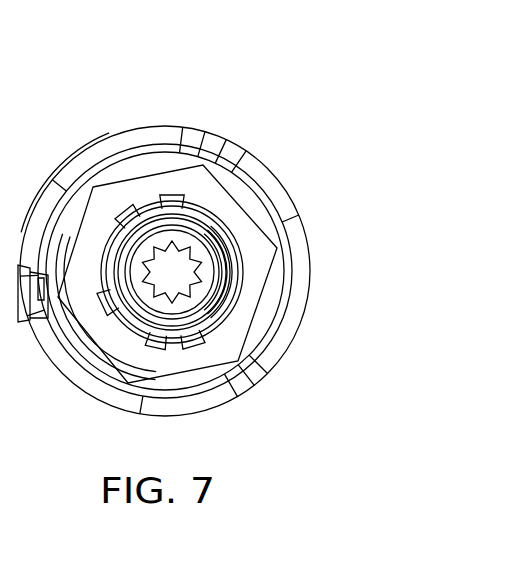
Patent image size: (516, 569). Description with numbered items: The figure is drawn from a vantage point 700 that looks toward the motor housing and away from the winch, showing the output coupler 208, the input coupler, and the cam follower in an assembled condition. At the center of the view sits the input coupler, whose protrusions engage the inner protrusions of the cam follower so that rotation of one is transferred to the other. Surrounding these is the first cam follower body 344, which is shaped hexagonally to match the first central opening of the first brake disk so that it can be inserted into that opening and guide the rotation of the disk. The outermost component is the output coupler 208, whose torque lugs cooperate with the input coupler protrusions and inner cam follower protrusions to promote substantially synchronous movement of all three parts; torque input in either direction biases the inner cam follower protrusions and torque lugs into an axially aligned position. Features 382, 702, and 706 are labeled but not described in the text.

The vantage point 700 is at (300, 106).
The output coupler 208 is at (127, 139).
The first cam follower body 344 is at (229, 210).
The central drive hub 382 is at (123, 297).
The locking tab 702 is at (171, 342).
The retaining tab 706 is at (203, 342).